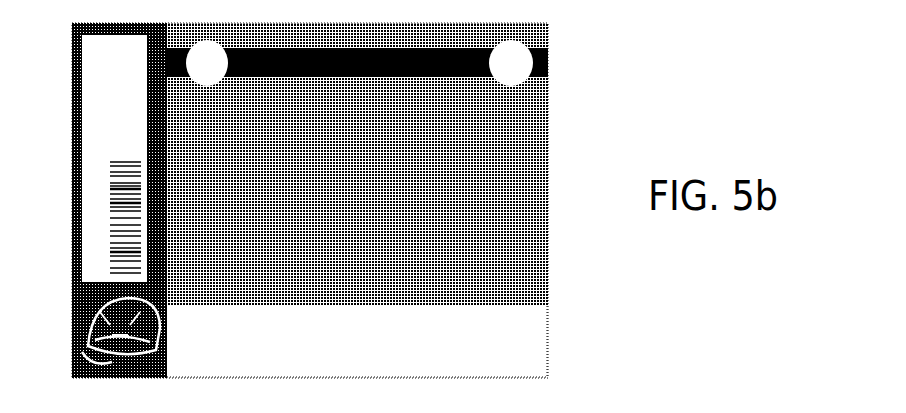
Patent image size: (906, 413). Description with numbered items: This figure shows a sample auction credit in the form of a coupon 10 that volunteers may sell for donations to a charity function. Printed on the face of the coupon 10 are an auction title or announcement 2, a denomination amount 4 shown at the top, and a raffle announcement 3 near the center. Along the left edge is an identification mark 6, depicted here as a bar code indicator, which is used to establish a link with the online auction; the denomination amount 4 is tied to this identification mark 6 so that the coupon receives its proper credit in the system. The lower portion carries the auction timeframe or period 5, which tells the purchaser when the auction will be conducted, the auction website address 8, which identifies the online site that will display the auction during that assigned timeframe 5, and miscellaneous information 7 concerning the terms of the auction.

The coupon 10 is at (608, 127).
The denomination amount 4 is at (548, 34).
The identification mark 6 is at (108, 202).
The auction title or announcement 2 is at (516, 190).
The raffle announcement 3 is at (535, 275).
The auction timeframe or period 5 is at (487, 320).
The auction website address 8 is at (220, 342).
The miscellaneous information 7 is at (512, 362).